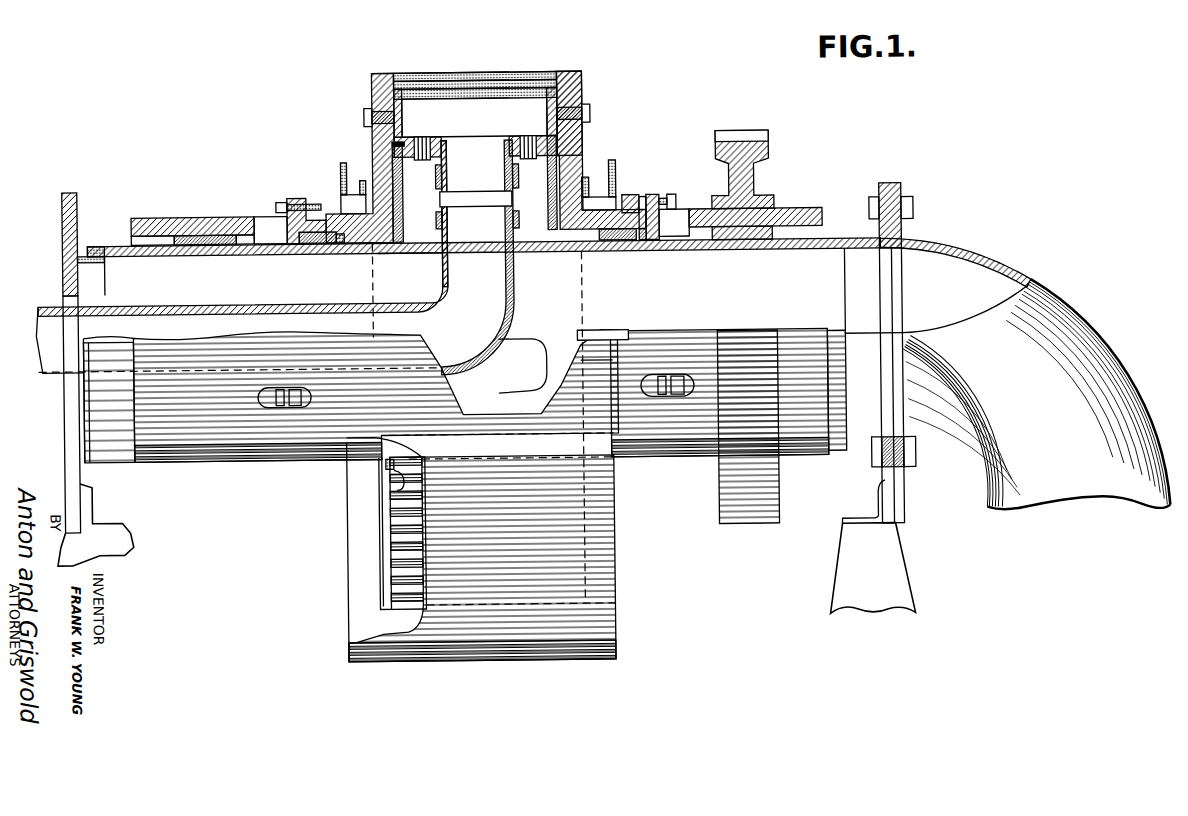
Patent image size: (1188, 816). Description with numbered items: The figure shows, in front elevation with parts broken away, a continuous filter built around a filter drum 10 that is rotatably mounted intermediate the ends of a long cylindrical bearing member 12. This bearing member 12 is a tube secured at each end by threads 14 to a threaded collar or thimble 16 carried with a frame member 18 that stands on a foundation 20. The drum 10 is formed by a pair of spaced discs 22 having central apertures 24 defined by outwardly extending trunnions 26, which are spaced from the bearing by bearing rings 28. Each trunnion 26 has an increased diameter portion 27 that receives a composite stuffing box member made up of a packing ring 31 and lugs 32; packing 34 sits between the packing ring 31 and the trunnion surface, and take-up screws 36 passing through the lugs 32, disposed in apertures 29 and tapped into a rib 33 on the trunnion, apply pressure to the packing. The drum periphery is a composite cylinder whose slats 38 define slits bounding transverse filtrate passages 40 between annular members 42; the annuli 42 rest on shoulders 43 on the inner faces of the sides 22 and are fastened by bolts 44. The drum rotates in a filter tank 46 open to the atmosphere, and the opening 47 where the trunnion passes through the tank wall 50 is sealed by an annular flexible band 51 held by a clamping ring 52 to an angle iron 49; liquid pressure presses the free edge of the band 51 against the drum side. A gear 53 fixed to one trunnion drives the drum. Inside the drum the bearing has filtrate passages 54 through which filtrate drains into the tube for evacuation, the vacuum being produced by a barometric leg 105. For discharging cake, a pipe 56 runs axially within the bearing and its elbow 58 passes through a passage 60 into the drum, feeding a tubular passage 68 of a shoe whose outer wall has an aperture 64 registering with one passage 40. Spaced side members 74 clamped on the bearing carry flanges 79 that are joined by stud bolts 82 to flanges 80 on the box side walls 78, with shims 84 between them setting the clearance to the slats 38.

The filter drum 10 is at (598, 95).
The cylindrical bearing member 12 is at (829, 240).
The threads 14 is at (97, 240).
The threaded collar or thimble 16 is at (96, 262).
The frame member 18 is at (63, 224).
The foundations 20 is at (120, 541).
The spaced discs 22 is at (374, 152).
The apertures 24 is at (386, 251).
The trunnion 26 is at (173, 215).
The increased diameter portion 27 is at (340, 244).
The bearing rings 28 is at (205, 234).
The apertures 29 is at (278, 385).
The packing ring 31 is at (310, 243).
The lugs 32 is at (283, 200).
The rib 33 is at (320, 198).
The packing 34 is at (612, 243).
The take-up screws 36 is at (277, 206).
The slats 38 is at (505, 78).
The filtrate passages 40 is at (542, 78).
The annular members 42 is at (581, 82).
The shoulders 43 is at (585, 141).
The bolts 44 is at (366, 114).
The filter tank 46 is at (598, 616).
The opening 47 is at (606, 200).
The angle iron 49 is at (352, 168).
The tank wall 50 is at (345, 198).
The flexible strap or band 51 is at (592, 178).
The clamping ring 52 is at (350, 520).
The gear 53 is at (764, 162).
The filtrate passages 54 is at (541, 351).
The pipe 56 is at (212, 303).
The elbow or bent extremity 58 is at (517, 292).
The passage 60 is at (449, 276).
The aperture 64 is at (470, 92).
The tubular passage 68 is at (478, 184).
The side members 74 is at (549, 200).
The side walls 78 is at (549, 108).
The flanges 79 is at (409, 160).
The flanges 80 is at (434, 140).
The stud bolts 82 is at (515, 165).
The shims 84 is at (393, 143).
The barometric leg 105 is at (1068, 342).